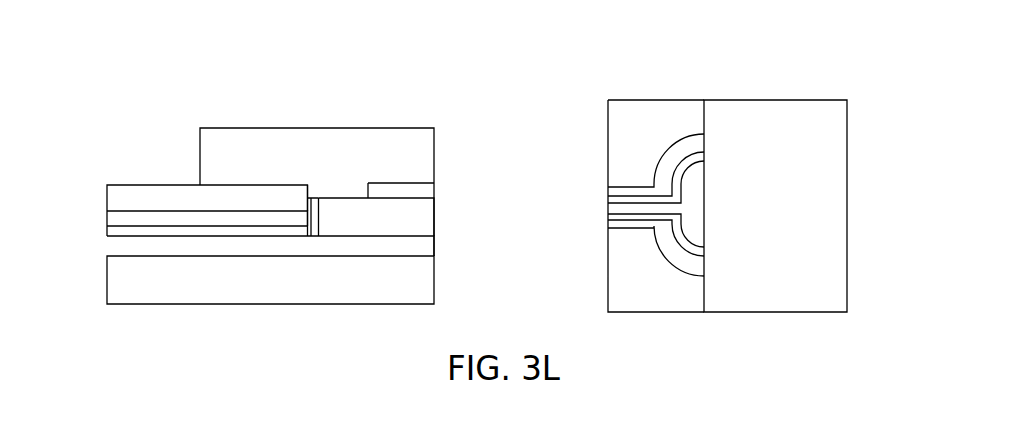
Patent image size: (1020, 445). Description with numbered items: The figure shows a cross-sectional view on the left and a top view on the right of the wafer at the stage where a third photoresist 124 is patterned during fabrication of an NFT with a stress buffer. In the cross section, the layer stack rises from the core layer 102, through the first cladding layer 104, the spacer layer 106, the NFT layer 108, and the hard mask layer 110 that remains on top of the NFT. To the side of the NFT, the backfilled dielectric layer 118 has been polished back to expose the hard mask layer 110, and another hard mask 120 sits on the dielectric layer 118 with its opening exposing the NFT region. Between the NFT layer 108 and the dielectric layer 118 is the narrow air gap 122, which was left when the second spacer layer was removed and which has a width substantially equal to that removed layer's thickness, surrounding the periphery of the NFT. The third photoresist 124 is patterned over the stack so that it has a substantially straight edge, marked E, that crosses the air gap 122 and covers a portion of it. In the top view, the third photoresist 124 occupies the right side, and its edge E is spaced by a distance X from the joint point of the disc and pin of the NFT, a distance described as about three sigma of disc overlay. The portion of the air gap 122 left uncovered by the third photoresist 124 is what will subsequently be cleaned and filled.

The core layer 102 is at (420, 292).
The first cladding layer 104 is at (423, 248).
The spacer layer 106 is at (107, 233).
The NFT layer 108 is at (110, 220).
The hard mask layer 110 is at (110, 202).
The dielectric layer 118 is at (422, 228).
The hard mask 120 is at (423, 190).
The air gap 122 is at (312, 196).
The third photoresist 124 is at (410, 153).